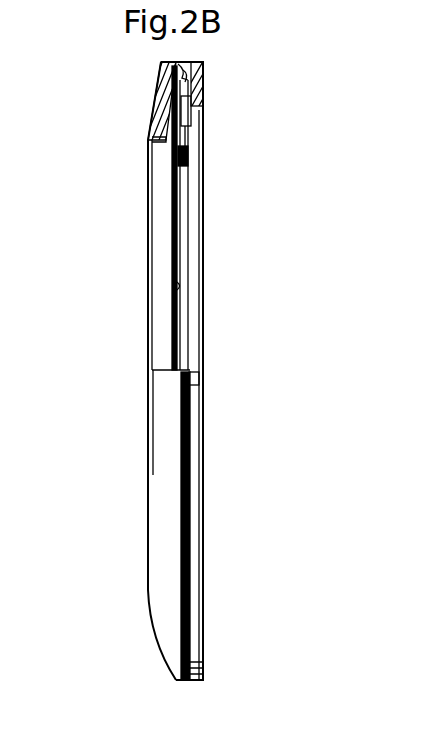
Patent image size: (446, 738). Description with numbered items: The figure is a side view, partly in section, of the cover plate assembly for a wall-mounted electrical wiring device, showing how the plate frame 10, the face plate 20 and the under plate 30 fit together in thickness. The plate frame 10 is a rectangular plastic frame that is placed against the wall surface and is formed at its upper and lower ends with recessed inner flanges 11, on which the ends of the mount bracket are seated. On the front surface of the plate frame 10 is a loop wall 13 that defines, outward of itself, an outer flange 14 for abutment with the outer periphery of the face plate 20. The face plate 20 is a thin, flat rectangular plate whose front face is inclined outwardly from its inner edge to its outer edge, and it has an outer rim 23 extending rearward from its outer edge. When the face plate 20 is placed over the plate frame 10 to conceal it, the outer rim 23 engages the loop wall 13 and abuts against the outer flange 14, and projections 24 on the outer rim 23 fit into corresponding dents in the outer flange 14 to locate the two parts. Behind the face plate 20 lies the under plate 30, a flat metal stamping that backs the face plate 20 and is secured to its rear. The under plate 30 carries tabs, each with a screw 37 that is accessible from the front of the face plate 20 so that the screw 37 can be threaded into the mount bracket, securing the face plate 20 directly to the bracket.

The plate frame 10 is at (205, 512).
The recessed inner flange 11 is at (203, 97).
The loop wall 13 is at (200, 78).
The outer flange 14 is at (196, 66).
The face plate 20 is at (146, 512).
The outer rim 23 is at (167, 69).
The projection 24 is at (158, 80).
The under plate 30 is at (177, 252).
The screw 37 is at (189, 157).